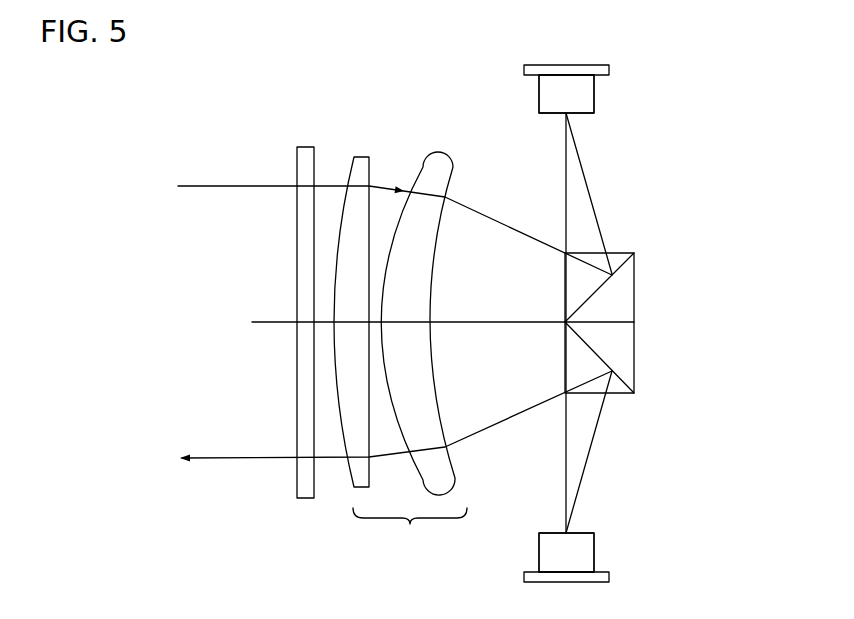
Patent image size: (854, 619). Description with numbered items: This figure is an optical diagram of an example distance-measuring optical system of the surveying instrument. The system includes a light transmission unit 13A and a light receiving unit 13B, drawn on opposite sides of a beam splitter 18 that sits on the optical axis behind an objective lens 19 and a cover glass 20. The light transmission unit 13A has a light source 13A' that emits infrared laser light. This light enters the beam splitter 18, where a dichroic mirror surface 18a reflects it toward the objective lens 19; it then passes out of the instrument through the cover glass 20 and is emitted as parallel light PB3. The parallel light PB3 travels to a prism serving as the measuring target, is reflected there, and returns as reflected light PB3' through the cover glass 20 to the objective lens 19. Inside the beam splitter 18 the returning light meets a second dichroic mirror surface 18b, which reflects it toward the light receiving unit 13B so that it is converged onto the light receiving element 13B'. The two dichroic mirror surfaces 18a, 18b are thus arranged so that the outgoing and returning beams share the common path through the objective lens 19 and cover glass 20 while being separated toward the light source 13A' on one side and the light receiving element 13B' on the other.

The cover glass 20 is at (309, 160).
The objective lens 19 is at (400, 359).
The beam splitter 18 is at (658, 296).
The dichroic mirror surface 18a is at (625, 377).
The dichroic mirror surface 18b is at (617, 253).
The light transmission unit 13A is at (544, 483).
The light source 13A' is at (629, 552).
The light receiving unit 13B is at (523, 299).
The light receiving element 13B' is at (629, 91).
The parallel light PB3 is at (396, 465).
The reflected light PB3' is at (395, 189).